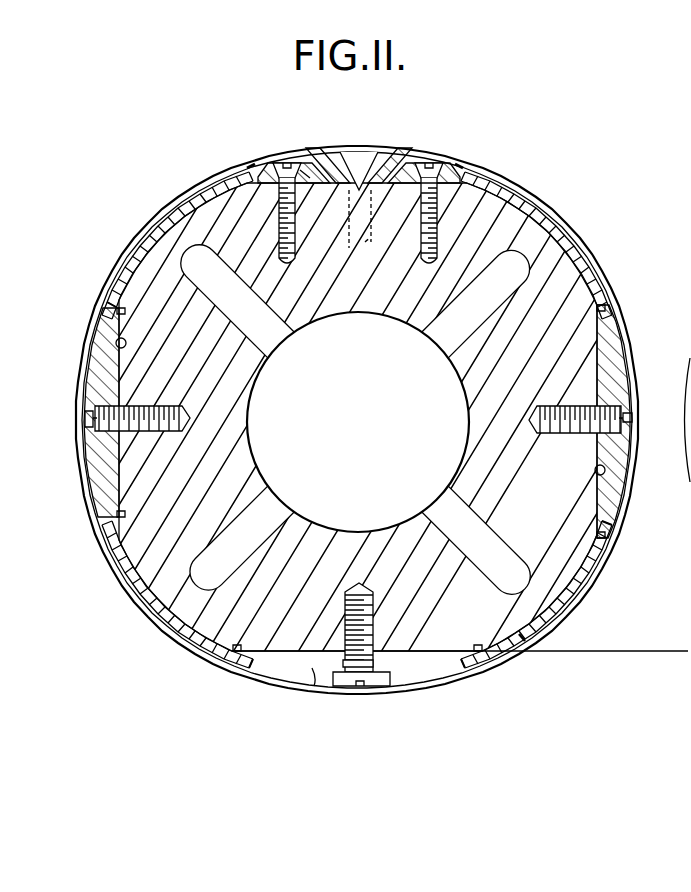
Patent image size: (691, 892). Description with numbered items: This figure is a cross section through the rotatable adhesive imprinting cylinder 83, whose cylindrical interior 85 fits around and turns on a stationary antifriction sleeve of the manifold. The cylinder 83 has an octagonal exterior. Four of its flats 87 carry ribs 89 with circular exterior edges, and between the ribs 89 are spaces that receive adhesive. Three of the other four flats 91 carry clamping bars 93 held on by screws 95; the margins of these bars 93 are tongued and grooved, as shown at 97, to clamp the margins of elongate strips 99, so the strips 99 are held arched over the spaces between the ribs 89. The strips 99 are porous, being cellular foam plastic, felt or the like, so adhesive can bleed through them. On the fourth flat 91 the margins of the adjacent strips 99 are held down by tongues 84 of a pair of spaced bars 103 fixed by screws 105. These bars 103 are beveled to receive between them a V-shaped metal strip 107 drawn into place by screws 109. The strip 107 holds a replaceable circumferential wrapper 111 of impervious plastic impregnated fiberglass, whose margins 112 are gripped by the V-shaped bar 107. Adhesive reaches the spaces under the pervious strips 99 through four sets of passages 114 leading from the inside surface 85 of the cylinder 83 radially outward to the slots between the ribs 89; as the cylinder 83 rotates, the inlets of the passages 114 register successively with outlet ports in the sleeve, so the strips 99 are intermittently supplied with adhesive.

The adhesive imprinting cylinder 83 is at (615, 293).
The tongues 84 is at (255, 168).
The cylindrical interior 85 is at (359, 313).
The flats 87 is at (165, 265).
The ribs 89 is at (203, 199).
The flats 91 is at (118, 340).
The clamping bars 93 is at (107, 359).
The screws 95 is at (153, 408).
The tongue and groove 97 is at (623, 315).
The elongate strips 99 is at (133, 280).
The spaced bars 103 is at (333, 181).
The screws 105 is at (279, 239).
The V-shaped metal strip 107 is at (378, 166).
The screws 109 is at (375, 247).
The wrapper 111 is at (525, 631).
The margins 112 is at (339, 189).
The passages 114 is at (248, 310).